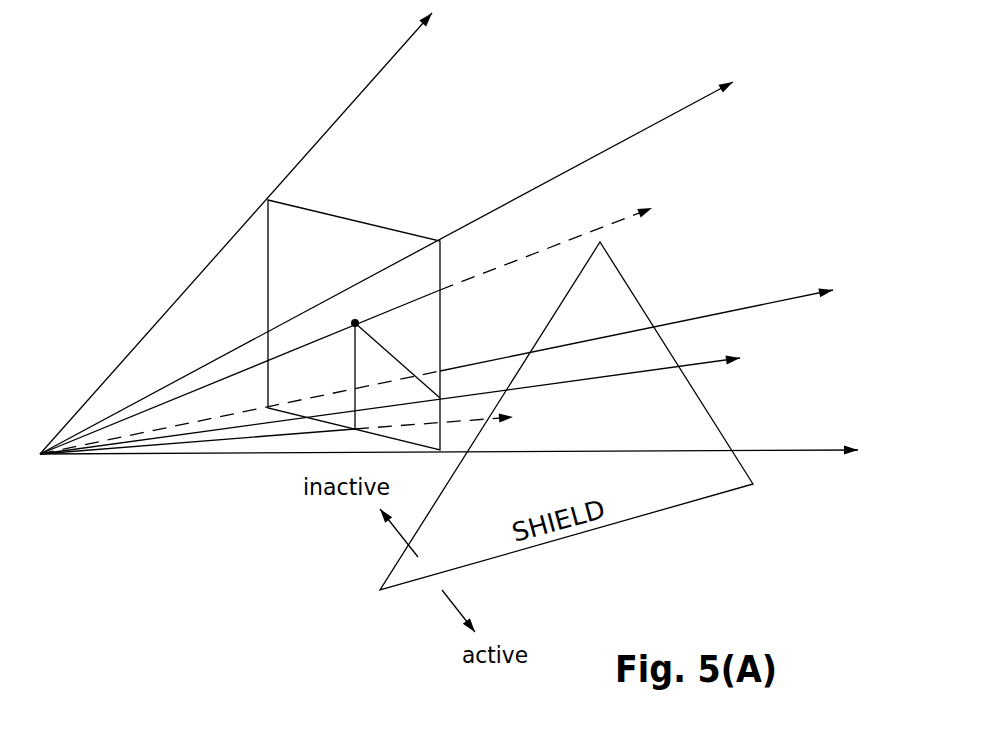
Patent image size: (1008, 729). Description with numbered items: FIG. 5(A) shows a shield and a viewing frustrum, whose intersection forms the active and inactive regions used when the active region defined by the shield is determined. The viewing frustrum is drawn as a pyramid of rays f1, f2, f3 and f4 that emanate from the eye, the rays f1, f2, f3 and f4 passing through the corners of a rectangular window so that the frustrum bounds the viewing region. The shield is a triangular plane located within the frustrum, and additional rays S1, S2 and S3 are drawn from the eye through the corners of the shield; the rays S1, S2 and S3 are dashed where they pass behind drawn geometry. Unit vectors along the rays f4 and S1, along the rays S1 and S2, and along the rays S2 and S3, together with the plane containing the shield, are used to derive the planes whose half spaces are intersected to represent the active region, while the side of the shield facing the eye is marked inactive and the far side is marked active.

The ray f1 is at (400, 262).
The ray f2 is at (251, 227).
The ray f3 is at (450, 365).
The ray f4 is at (461, 454).
The ray s1 S1 is at (406, 399).
The ray s2 S2 is at (361, 319).
The ray s3 S3 is at (294, 429).